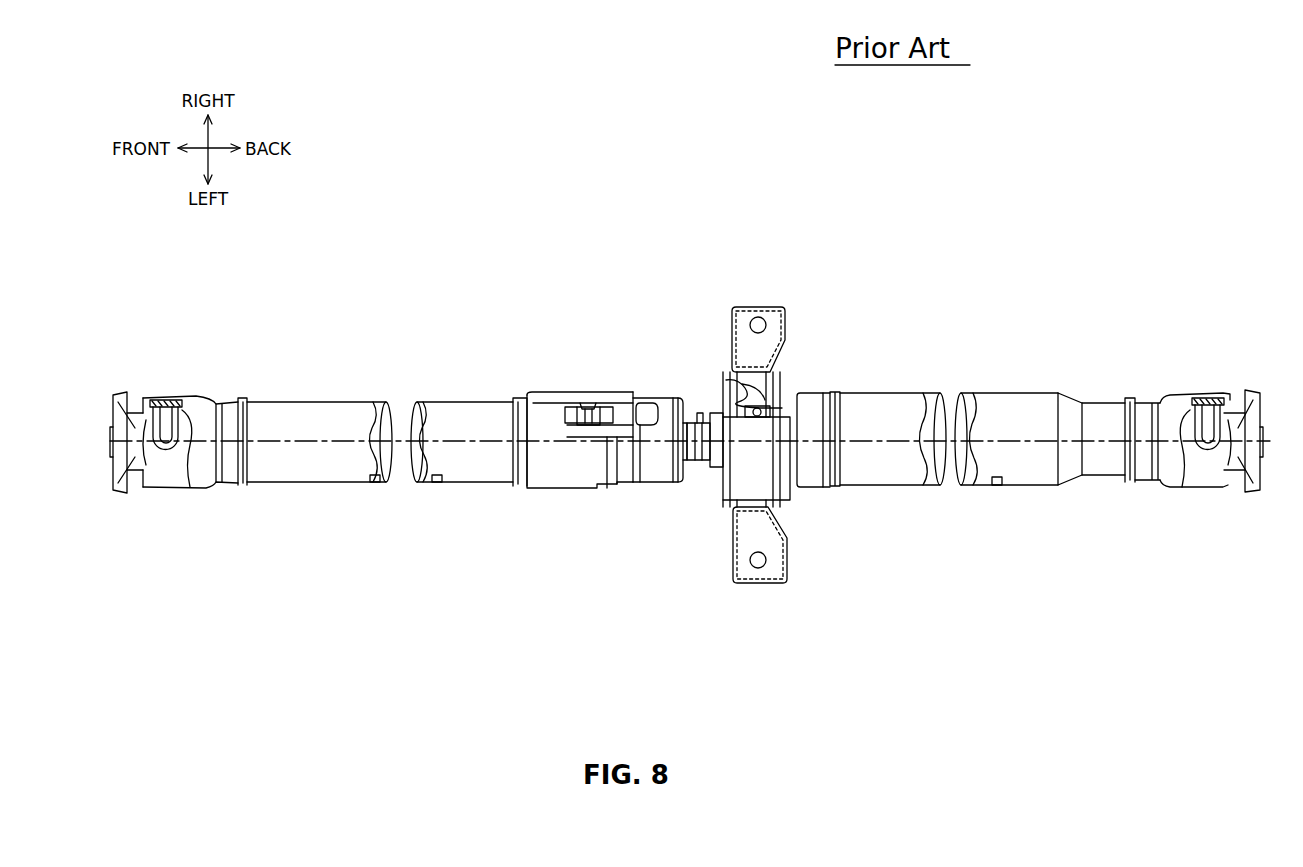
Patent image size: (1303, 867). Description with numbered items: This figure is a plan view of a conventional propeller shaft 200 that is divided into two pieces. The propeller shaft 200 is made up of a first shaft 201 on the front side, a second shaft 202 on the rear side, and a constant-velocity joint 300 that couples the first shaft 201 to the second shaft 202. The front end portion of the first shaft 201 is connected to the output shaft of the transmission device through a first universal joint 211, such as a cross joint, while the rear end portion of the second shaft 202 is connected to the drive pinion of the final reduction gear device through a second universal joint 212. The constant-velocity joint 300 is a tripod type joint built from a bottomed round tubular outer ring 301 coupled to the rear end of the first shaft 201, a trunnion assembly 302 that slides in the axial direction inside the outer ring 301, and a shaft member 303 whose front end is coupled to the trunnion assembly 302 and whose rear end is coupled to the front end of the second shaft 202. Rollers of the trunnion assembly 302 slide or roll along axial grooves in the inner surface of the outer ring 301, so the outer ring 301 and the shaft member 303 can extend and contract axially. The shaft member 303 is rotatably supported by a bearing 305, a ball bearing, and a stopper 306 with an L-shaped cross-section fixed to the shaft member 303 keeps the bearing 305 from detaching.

The propeller shaft 200 is at (722, 172).
The first shaft 201 is at (331, 401).
The second shaft 202 is at (1018, 393).
The first universal joint 211 is at (166, 395).
The second universal joint 212 is at (1211, 386).
The constant-velocity joint 300 is at (630, 301).
The outer ring 301 is at (569, 395).
The trunnion assembly 302 is at (553, 413).
The shaft member 303 is at (716, 420).
The bearing 305 is at (765, 410).
The stopper 306 is at (653, 399).